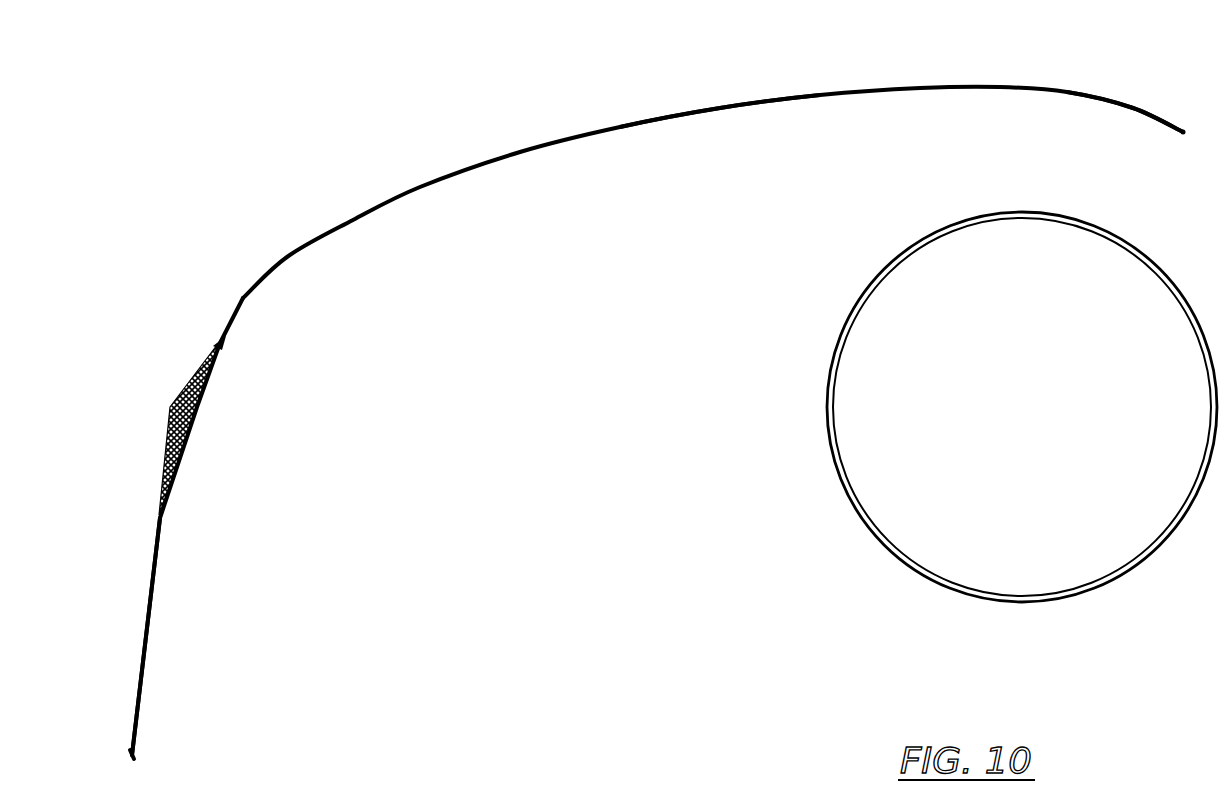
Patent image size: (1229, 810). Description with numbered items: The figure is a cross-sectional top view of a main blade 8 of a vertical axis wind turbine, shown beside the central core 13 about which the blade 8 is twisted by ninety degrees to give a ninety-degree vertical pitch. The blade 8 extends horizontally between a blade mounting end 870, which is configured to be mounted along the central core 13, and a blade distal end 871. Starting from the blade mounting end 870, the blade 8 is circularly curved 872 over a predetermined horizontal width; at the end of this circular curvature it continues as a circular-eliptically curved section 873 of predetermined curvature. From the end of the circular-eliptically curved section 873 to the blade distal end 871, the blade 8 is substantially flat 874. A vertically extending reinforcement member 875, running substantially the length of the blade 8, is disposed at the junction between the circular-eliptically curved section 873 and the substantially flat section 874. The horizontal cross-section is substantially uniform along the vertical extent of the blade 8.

The main blade 8 is at (204, 240).
The blade mounting end 870 is at (1183, 141).
The blade distal end 871 is at (136, 747).
The circularly curved section 872 is at (1143, 107).
The circular-eliptically curved section 873 is at (693, 110).
The substantially flat section 874 is at (153, 580).
The reinforcement member 875 is at (192, 373).
The central core 13 is at (1128, 573).